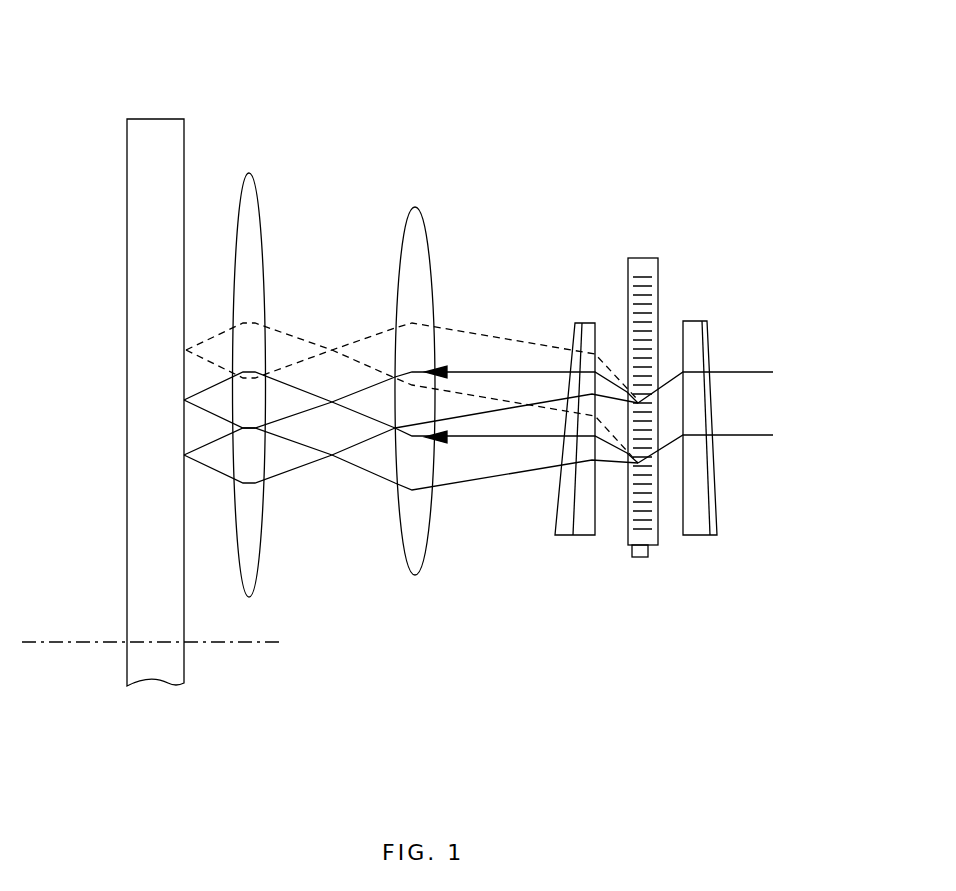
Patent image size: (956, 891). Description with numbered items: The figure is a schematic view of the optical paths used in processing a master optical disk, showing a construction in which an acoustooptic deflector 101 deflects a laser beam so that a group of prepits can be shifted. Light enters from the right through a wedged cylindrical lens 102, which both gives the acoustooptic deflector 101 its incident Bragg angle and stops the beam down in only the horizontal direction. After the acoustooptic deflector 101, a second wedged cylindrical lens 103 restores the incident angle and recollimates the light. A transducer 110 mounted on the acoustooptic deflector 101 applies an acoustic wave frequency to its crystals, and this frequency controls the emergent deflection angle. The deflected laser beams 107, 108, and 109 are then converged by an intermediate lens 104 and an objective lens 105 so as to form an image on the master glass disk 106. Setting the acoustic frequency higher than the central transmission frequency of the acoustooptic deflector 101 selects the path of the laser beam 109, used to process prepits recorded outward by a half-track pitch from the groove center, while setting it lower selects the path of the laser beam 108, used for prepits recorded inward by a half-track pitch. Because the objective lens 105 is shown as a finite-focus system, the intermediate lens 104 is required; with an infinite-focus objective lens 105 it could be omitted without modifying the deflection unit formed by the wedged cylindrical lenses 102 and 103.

The acoustooptic deflector 101 is at (673, 292).
The wedged cylindrical lens 102 is at (732, 287).
The wedged cylindrical lens 103 is at (605, 287).
The intermediate lens 104 is at (416, 374).
The objective lens 105 is at (255, 373).
The master glass disk 106 is at (155, 378).
The deflected laser beam 107 is at (478, 269).
The laser beam 108 is at (478, 554).
The laser beam 109 is at (412, 243).
The transducer 110 is at (620, 599).